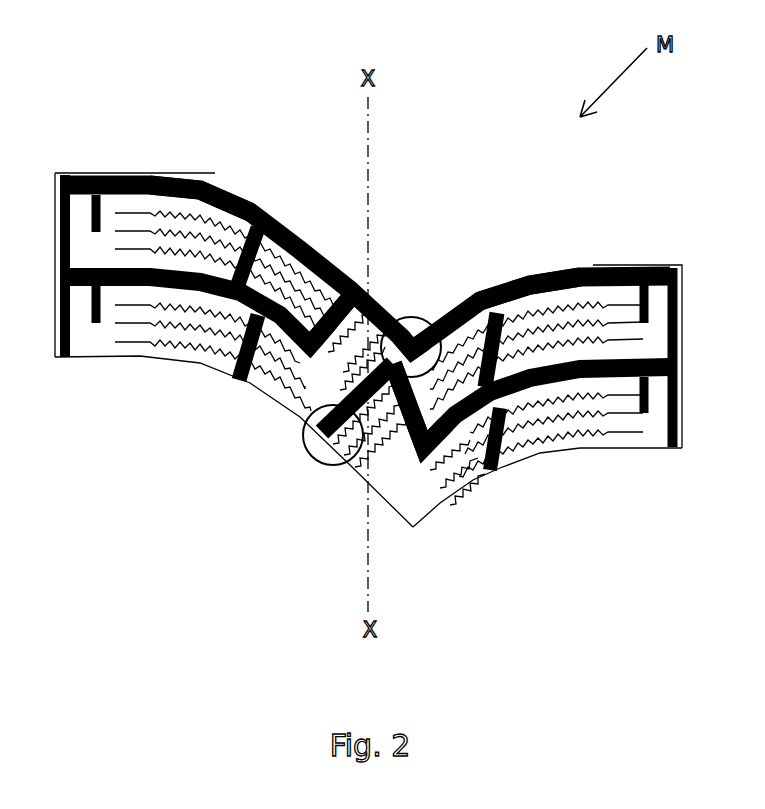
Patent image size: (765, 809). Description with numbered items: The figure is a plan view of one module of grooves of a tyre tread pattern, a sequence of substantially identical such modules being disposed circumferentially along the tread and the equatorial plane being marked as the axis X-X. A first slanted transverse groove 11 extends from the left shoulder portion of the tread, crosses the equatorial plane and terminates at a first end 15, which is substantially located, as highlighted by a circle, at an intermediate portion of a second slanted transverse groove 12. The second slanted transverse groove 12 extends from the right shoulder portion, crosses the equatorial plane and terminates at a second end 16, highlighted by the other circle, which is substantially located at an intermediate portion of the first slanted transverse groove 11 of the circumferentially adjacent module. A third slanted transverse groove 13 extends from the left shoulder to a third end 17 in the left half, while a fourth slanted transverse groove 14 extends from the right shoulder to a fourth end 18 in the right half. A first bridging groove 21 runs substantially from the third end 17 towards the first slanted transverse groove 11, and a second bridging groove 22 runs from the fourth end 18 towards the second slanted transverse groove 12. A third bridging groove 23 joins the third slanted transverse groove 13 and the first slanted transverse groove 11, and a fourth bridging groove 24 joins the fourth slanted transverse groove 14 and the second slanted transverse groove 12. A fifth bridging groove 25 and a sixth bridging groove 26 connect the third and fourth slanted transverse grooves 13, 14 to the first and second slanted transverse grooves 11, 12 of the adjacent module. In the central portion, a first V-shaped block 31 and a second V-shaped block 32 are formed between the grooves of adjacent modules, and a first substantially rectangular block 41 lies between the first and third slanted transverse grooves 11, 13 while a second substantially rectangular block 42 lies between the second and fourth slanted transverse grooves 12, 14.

The first slanted transverse groove 11 is at (137, 176).
The second slanted transverse groove 12 is at (565, 269).
The third slanted transverse groove 13 is at (150, 287).
The fourth slanted transverse groove 14 is at (565, 378).
The first end 15 is at (413, 345).
The second end 16 is at (333, 432).
The third end 17 is at (307, 353).
The fourth end 18 is at (425, 437).
The first bridging groove 21 is at (333, 313).
The second bridging groove 22 is at (400, 400).
The third bridging groove 23 is at (207, 183).
The fourth bridging groove 24 is at (496, 312).
The fifth bridging groove 25 is at (241, 365).
The sixth bridging groove 26 is at (503, 453).
The first V-shaped block 31 is at (303, 403).
The second V-shaped block 32 is at (415, 480).
The first substantially rectangular block 41 is at (292, 270).
The second substantially rectangular block 42 is at (467, 325).